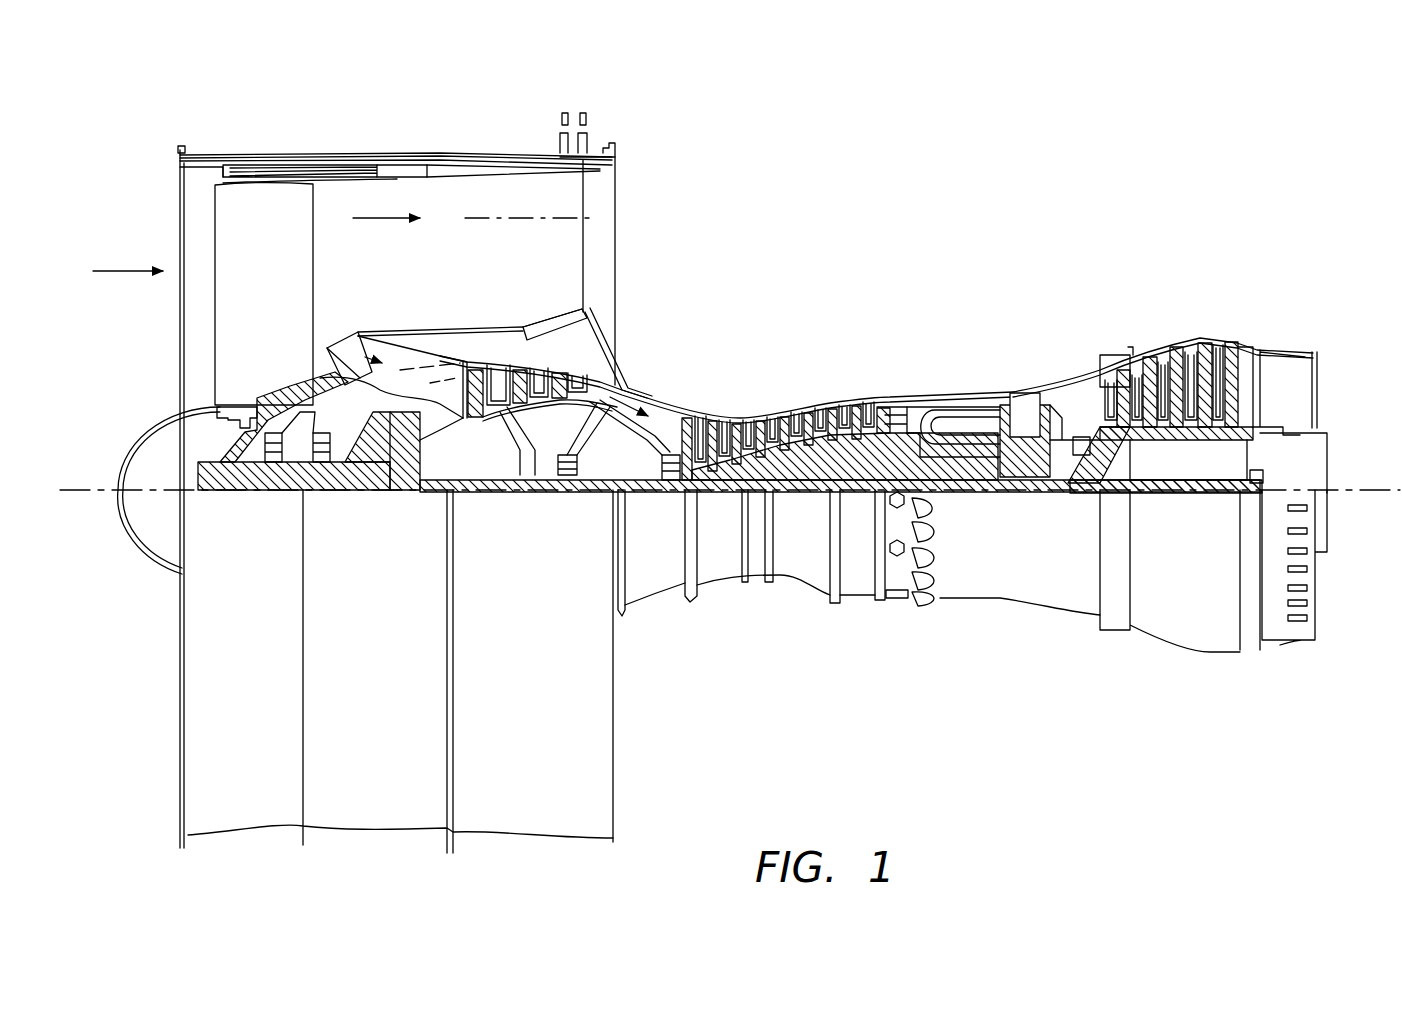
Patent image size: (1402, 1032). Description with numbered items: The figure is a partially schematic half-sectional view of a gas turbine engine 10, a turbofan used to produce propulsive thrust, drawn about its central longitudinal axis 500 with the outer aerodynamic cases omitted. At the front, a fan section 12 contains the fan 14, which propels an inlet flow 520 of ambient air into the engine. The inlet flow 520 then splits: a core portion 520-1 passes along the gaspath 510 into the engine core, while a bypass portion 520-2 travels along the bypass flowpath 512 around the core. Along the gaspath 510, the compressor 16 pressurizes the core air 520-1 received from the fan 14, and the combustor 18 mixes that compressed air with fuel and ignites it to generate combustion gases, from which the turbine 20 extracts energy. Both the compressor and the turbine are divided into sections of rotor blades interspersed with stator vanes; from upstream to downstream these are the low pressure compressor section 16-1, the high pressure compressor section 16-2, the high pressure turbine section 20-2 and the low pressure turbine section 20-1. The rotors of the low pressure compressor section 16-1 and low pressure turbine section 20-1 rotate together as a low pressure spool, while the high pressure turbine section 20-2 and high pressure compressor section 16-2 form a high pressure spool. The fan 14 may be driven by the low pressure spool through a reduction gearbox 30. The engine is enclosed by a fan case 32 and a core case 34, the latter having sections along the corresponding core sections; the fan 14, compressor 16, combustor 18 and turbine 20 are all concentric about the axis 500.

The gas turbine engine 10 is at (146, 131).
The fan section 12 is at (250, 143).
The fan 14 is at (268, 228).
The compressor 16 is at (726, 367).
The low pressure compressor section 16-1 is at (572, 358).
The high pressure compressor section 16-2 is at (785, 396).
The combustor 18 is at (962, 420).
The turbine 20 is at (1162, 338).
The low pressure turbine section 20-1 is at (1171, 335).
The high pressure turbine section 20-2 is at (1024, 376).
The reduction gearbox 30 is at (405, 475).
The fan case 32 is at (375, 800).
The core case 34 is at (850, 612).
The central longitudinal axis 500 is at (118, 487).
The gaspath 510 is at (420, 368).
The bypass flowpath 512 is at (598, 215).
The inlet flow 520 is at (120, 270).
The core portion 520-1 is at (330, 347).
The bypass portion 520-2 is at (382, 217).